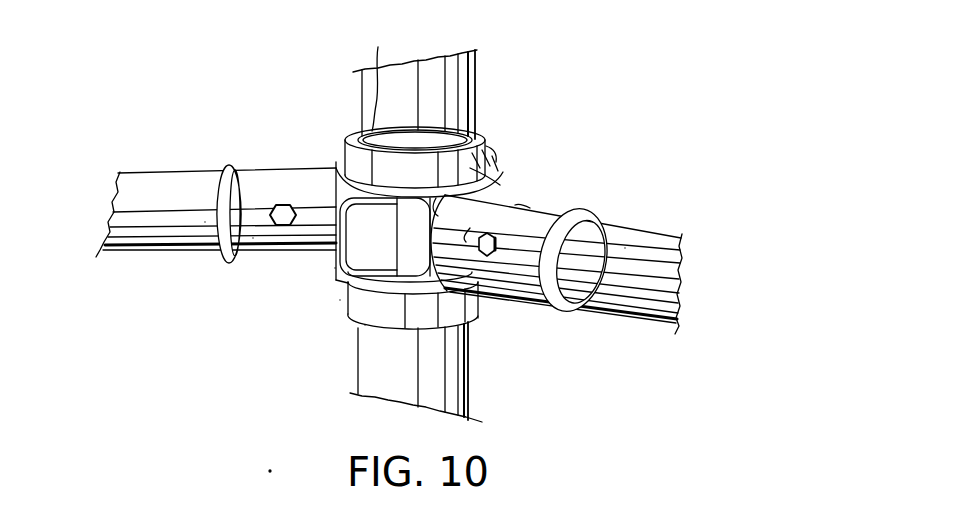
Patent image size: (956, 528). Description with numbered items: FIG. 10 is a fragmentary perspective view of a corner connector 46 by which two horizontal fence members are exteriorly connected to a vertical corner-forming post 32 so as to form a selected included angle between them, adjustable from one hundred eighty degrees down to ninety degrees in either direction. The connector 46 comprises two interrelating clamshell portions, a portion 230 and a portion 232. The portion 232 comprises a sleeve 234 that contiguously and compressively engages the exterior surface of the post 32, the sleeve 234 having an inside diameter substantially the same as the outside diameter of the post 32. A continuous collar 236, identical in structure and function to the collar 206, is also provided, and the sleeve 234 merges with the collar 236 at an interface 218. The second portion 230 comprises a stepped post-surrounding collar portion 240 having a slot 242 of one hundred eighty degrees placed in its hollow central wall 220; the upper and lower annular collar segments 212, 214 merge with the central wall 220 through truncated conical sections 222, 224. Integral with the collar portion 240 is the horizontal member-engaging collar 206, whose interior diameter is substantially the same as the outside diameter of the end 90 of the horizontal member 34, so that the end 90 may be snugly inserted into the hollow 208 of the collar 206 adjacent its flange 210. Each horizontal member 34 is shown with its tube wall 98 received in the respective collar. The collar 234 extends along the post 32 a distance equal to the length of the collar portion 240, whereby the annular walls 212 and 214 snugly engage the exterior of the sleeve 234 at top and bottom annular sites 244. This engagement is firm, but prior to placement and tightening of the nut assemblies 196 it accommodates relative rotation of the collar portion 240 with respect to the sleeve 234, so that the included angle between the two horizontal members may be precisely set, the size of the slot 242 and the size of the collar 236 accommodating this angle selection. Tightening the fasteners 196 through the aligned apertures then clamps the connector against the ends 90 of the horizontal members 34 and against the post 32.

The post 32 is at (486, 80).
The horizontal member 34 is at (162, 164).
The corner connector 46 is at (506, 145).
The end 90 is at (205, 222).
The tube wall 98 is at (381, 100).
The nut assembly 196 is at (280, 198).
The collar 206 is at (253, 241).
The hollow 208 is at (630, 251).
The flange 210 is at (227, 166).
The collar segment 212 is at (374, 168).
The collar segment 214 is at (365, 326).
The interface 218 is at (451, 216).
The hollow central wall 220 is at (335, 268).
The truncated conical section 222 is at (492, 171).
The truncated conical section 224 is at (413, 300).
The portion 230 is at (334, 150).
The portion 232 is at (470, 228).
The sleeve 234 is at (354, 243).
The continuous collar 236 is at (499, 262).
The stepped post-surrounding collar portion 240 is at (339, 304).
The slot 242 is at (530, 197).
The sites 244 is at (372, 79).